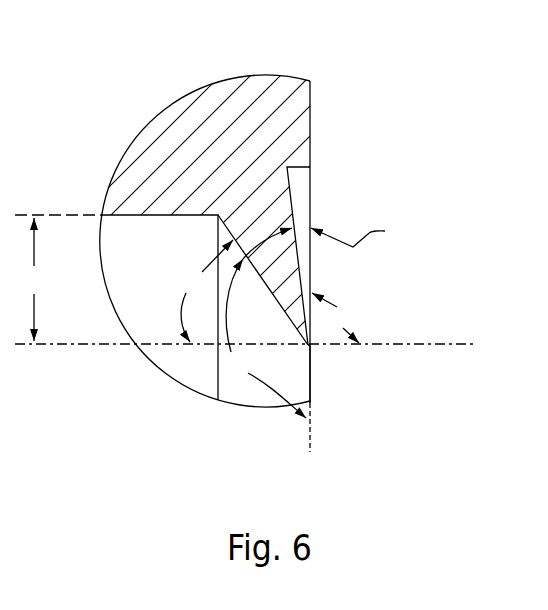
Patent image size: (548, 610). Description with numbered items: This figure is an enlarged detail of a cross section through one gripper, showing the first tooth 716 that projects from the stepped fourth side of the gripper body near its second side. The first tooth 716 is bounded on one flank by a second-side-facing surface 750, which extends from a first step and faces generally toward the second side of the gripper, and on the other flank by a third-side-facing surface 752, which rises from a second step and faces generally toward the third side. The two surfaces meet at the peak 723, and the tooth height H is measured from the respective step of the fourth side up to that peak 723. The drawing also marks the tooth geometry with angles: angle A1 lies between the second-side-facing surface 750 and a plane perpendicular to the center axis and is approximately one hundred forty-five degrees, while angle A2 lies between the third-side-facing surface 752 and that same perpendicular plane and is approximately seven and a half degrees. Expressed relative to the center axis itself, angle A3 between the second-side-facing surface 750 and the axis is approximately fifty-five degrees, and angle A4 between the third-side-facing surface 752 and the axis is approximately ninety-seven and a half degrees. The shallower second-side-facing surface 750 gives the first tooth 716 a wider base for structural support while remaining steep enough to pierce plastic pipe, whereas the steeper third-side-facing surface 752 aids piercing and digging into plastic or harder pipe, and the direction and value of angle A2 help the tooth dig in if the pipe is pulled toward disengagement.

The first tooth 716 is at (273, 218).
The second-side-facing surface 750 is at (218, 236).
The third-side-facing surface 752 is at (301, 262).
The peak 723 is at (310, 348).
The height H is at (34, 279).
The angle A1 is at (265, 338).
The angle A2 is at (330, 237).
The angle A3 is at (204, 291).
The angle A4 is at (335, 318).